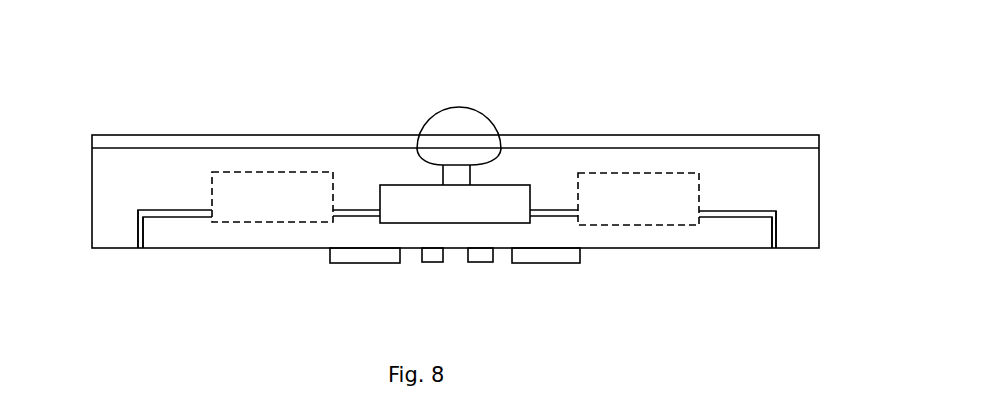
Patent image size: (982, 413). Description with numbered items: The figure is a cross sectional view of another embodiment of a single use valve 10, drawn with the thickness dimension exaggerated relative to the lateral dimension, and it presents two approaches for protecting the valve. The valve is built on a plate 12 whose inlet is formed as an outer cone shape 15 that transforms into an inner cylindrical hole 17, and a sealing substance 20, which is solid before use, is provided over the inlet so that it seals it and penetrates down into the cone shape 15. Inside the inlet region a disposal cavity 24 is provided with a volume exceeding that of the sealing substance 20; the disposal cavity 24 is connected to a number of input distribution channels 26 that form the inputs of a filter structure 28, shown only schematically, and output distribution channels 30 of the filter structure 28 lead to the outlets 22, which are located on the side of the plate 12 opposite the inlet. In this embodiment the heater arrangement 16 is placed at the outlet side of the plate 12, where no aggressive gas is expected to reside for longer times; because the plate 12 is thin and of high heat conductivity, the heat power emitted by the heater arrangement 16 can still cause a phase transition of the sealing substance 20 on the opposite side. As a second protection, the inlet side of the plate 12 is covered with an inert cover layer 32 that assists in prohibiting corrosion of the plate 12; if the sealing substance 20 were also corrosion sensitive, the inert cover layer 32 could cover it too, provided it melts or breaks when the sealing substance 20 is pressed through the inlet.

The single use valve 10 is at (702, 99).
The plate 12 is at (91, 249).
The outer cone shape 15 is at (453, 148).
The heater arrangement 16 is at (370, 264).
The inner cylindrical hole 17 is at (452, 177).
The sealing substance 20 is at (472, 118).
The outlets 22 is at (139, 249).
The disposal cavity 24 is at (520, 185).
The input distribution channels 26 is at (343, 211).
The filter structure 28 is at (280, 223).
The output distribution channels 30 is at (180, 218).
The inert cover layer 32 is at (593, 146).